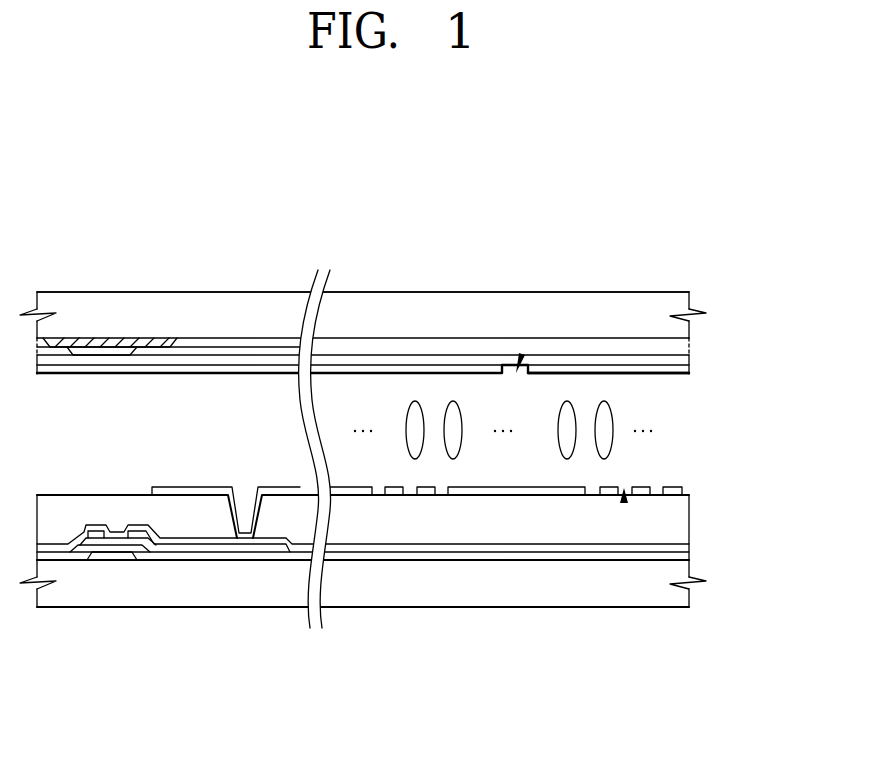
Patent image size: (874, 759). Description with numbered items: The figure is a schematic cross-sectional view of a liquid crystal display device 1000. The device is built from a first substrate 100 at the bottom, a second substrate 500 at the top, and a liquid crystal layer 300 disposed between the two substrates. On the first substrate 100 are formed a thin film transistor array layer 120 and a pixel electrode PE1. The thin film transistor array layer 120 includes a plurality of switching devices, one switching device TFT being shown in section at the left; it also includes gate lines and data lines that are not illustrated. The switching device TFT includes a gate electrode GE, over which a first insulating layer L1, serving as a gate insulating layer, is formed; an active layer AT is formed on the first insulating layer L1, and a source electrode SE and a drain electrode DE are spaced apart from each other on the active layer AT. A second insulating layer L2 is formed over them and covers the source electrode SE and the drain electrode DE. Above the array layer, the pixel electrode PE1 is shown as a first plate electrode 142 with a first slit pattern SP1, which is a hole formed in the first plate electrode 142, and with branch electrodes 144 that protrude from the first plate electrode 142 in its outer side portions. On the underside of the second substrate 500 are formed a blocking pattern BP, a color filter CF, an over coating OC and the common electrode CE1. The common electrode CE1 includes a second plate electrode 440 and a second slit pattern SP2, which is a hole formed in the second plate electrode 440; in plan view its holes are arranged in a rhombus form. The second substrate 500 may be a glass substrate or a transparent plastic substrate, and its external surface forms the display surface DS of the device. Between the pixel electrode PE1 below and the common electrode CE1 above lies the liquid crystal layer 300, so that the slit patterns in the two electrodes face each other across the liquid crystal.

The liquid crystal display device 1000 is at (622, 155).
The second substrate 500 is at (688, 303).
The display surface DS is at (652, 290).
The blocking pattern BP is at (80, 342).
The color filter CF is at (420, 346).
The over coating OC is at (481, 358).
The common electrode CE1 is at (702, 369).
The second plate electrode 440 is at (585, 370).
The second slit pattern SP2 is at (522, 352).
The liquid crystal layer 300 is at (693, 376).
The pixel electrode PE1 is at (701, 487).
The branch electrodes 144 is at (426, 497).
The first plate electrode 142 is at (520, 497).
The first slit pattern SP1 is at (625, 503).
The thin film transistor array layer 120 is at (693, 492).
The first substrate 100 is at (684, 597).
The first insulating layer L1 is at (272, 554).
The second insulating layer L2 is at (223, 541).
The switching device TFT is at (197, 655).
The gate electrode GE is at (110, 557).
The active layer AT is at (164, 548).
The source electrode SE is at (95, 535).
The drain electrode DE is at (138, 537).